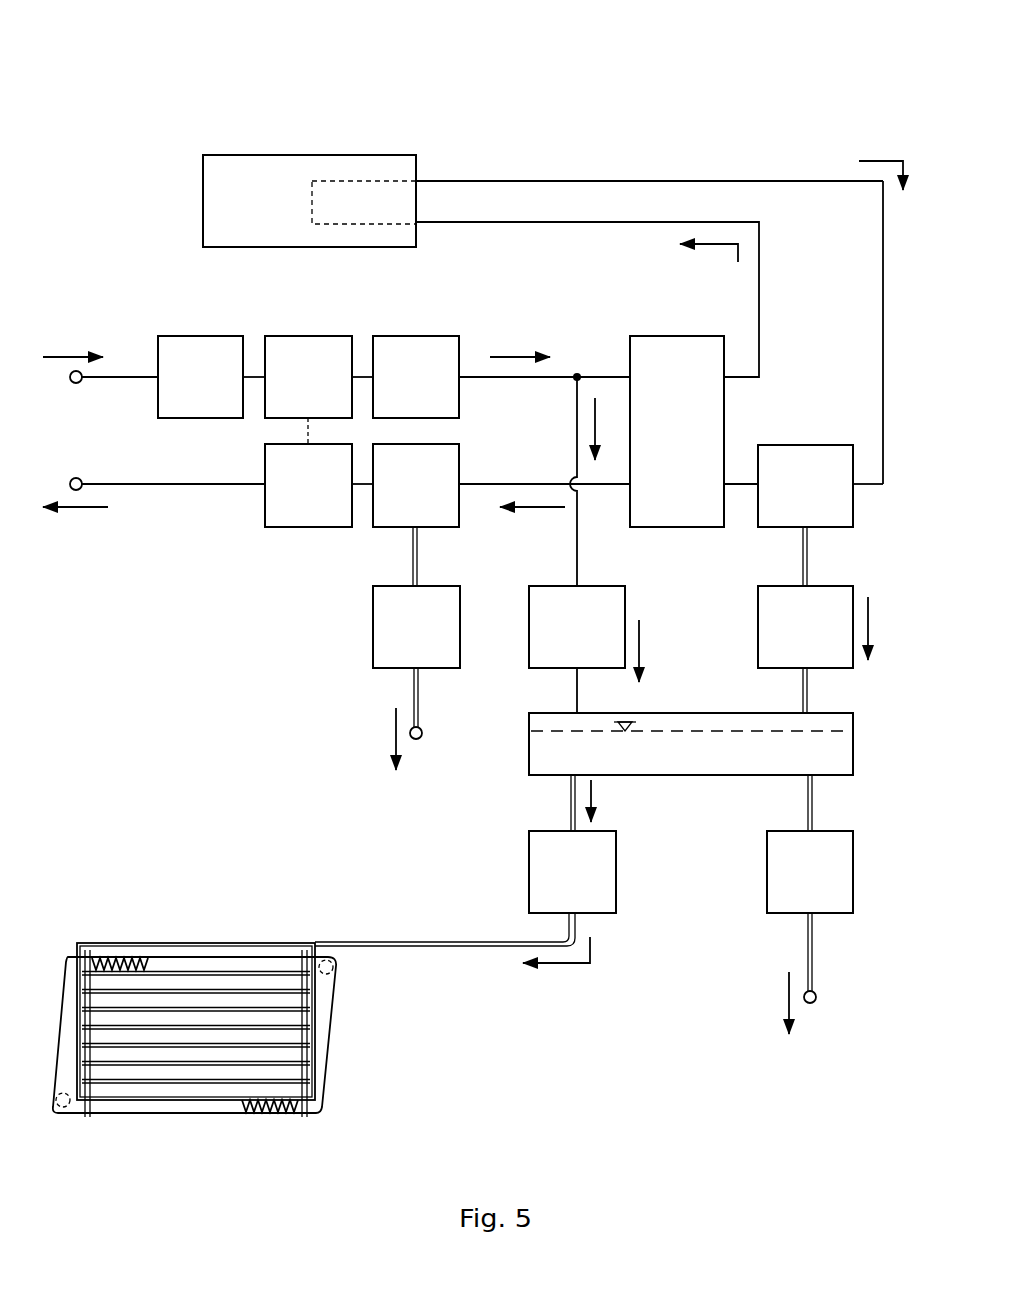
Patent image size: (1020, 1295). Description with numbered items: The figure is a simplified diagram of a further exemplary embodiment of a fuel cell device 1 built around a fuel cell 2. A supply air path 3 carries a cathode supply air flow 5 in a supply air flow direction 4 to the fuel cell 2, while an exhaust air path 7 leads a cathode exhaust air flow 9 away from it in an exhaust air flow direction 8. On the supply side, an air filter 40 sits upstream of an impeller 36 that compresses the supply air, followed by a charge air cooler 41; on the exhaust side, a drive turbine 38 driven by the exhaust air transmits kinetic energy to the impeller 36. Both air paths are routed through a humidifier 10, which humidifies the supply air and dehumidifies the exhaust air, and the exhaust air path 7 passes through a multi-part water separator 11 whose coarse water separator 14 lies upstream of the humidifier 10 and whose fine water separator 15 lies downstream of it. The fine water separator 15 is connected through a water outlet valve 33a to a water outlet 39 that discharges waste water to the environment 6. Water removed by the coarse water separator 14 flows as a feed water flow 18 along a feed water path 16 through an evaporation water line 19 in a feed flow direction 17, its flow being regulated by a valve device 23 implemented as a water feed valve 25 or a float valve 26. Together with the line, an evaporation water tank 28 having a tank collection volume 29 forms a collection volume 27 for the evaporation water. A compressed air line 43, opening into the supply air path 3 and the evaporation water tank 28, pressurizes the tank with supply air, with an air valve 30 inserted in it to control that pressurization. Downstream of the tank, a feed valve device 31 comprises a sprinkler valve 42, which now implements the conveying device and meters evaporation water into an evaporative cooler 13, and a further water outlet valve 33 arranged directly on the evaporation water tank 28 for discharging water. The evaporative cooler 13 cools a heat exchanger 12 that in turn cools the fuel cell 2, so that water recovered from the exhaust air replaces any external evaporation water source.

The fuel cell device 1 is at (143, 132).
The fuel cell 2 is at (257, 213).
The supply air path 3 is at (554, 224).
The cathode supply air flow 5 is at (479, 279).
The supply air flow direction 4 is at (70, 355).
The exhaust air flow direction 8 is at (82, 509).
The exhaust air path 7 is at (884, 333).
The cathode exhaust air flow 9 is at (520, 368).
The air filter 40 is at (212, 387).
The impeller 36 is at (320, 387).
The charge air cooler 41 is at (428, 387).
The drive turbine 38 is at (320, 495).
The multi-part water separator 11 is at (445, 495).
The fine water separator 15 is at (416, 485).
The coarse water separator 14 is at (805, 486).
The humidifier 10 is at (692, 435).
The compressed air line 43 is at (576, 427).
The air valve 30 is at (590, 637).
The water outlet valve 33a is at (434, 637).
The water outlet 39 is at (419, 697).
The environment 6 is at (318, 728).
The valve device 23 is at (834, 625).
The water feed valve 25 is at (805, 627).
The float valve 26 is at (816, 656).
The feed water path 16 is at (808, 553).
The feed water flow 18 is at (664, 736).
The evaporation water line 19 is at (693, 736).
The collection volume 27 is at (445, 909).
The feed flow direction 17 is at (870, 621).
The tank collection volume 29 is at (712, 764).
The evaporation water tank 28 is at (854, 742).
The sprinkler valve 42 is at (583, 882).
The further water outlet valve 33 is at (821, 882).
The feed valve device 31 is at (500, 848).
The heat exchanger 12 is at (331, 1042).
The evaporative cooler 13 is at (241, 1030).